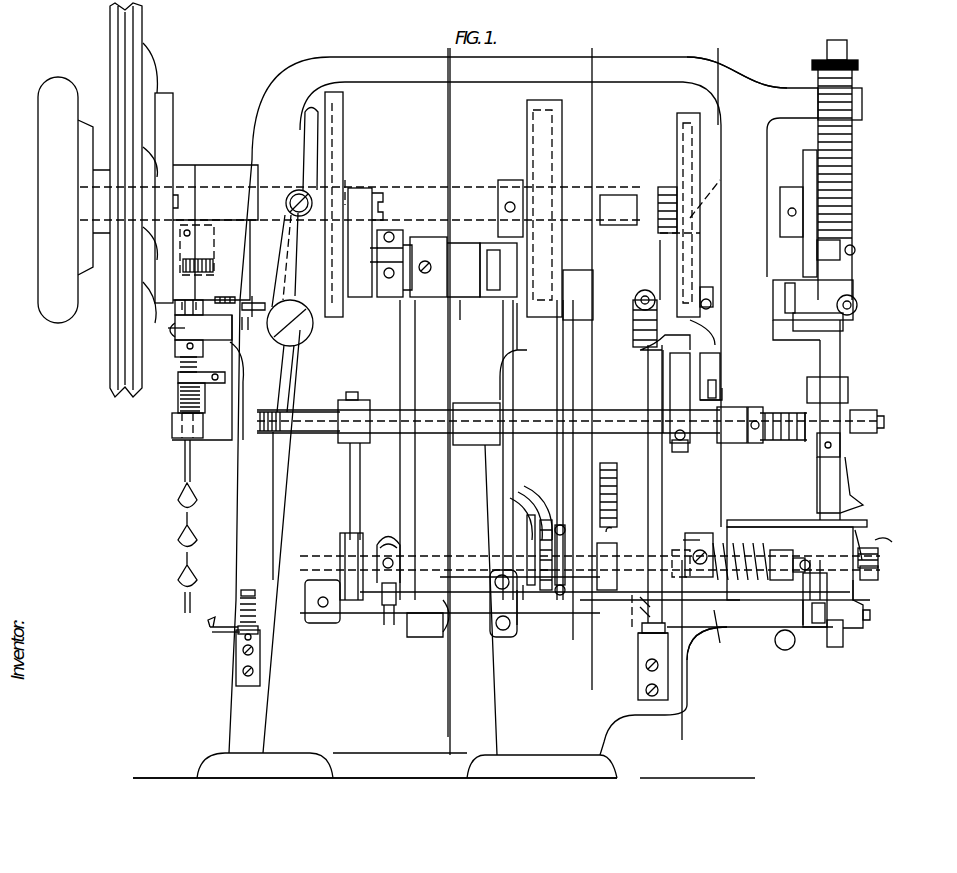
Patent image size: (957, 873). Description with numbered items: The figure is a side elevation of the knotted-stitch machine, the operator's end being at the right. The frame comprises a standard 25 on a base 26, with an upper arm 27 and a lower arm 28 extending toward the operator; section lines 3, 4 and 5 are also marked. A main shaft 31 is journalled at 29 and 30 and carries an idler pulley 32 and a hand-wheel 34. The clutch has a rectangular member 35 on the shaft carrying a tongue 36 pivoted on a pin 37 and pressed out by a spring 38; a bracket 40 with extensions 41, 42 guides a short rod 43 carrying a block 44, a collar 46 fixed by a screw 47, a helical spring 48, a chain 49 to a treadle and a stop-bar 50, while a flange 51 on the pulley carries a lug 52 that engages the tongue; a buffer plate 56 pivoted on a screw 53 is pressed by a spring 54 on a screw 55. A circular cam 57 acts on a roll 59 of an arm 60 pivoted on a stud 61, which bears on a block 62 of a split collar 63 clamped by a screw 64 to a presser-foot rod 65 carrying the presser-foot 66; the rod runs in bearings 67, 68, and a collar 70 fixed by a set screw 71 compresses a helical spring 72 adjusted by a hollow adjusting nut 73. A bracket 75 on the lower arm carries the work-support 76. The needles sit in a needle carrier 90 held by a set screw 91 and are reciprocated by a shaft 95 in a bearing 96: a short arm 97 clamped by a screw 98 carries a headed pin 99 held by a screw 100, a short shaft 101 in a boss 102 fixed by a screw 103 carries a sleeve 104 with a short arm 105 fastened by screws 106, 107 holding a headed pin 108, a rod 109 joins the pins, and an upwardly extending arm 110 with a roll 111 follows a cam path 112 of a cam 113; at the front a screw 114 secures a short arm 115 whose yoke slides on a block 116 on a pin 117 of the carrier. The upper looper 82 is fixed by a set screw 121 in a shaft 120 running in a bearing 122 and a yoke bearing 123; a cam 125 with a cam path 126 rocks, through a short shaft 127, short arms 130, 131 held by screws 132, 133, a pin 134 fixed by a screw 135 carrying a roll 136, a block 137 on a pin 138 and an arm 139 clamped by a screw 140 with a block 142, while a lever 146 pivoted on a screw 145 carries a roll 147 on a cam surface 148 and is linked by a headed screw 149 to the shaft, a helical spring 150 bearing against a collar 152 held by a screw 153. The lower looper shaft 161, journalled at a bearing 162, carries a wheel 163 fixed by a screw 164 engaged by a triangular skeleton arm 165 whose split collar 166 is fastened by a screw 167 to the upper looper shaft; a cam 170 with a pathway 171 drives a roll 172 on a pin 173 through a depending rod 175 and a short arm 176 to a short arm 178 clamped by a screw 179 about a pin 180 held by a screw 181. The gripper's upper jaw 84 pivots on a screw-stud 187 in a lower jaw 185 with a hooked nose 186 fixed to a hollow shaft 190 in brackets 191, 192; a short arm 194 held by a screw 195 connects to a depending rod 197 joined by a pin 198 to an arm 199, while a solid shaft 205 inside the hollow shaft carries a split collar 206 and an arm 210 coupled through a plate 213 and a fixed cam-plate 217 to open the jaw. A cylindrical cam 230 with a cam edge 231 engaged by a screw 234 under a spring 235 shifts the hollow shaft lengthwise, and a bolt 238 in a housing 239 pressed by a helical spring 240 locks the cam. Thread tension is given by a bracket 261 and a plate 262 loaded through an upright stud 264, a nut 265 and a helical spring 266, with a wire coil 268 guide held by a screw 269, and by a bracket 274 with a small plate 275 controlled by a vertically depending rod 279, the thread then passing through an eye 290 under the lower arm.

The section line 3 is at (703, 392).
The section line 4 is at (591, 370).
The section line 5 is at (440, 392).
The frame standard 25 is at (237, 516).
The base 26 is at (204, 764).
The frame head 27 is at (651, 64).
The collar 28 is at (697, 517).
The lever 29 is at (258, 203).
The housing 30 is at (754, 210).
The main shaft 31 is at (432, 218).
The driving pulley 32 is at (140, 32).
The hand wheel 34 is at (52, 147).
The bearing block 35 is at (187, 172).
The bracket 36 is at (178, 296).
The plate 37 is at (193, 234).
The rack 38 is at (215, 264).
The bracket 40 is at (207, 392).
The latch 41 is at (185, 332).
The housing 42 is at (175, 437).
The rod 43 is at (186, 460).
The pin 44 is at (183, 312).
The spring seat 46 is at (181, 352).
The screw 47 is at (193, 348).
The spring 48 is at (180, 390).
The chain 49 is at (182, 558).
The pin 50 is at (182, 410).
The pulley hub 51 is at (176, 108).
The key 52 is at (180, 202).
The clip 53 is at (230, 288).
The arm 54 is at (255, 332).
The clip 55 is at (258, 295).
The block 56 is at (201, 327).
The rod 57 is at (820, 172).
The bracket 59 is at (813, 282).
The arm 60 is at (818, 348).
The plate 61 is at (838, 332).
The pin 62 is at (796, 300).
The screw head 63 is at (857, 298).
The screw 64 is at (857, 314).
The post 65 is at (835, 364).
The presser foot 66 is at (838, 492).
The nut 67 is at (862, 110).
The block 68 is at (848, 387).
The clamp 70 is at (838, 248).
The screw 71 is at (857, 253).
The threaded rod 72 is at (852, 198).
The knurled knob 73 is at (855, 78).
The block 75 is at (768, 550).
The plate 76 is at (870, 526).
The bar 82 is at (860, 457).
The clamp 84 is at (876, 550).
The block 90 is at (850, 630).
The screw 91 is at (872, 617).
The shaft 95 is at (464, 568).
The bracket 96 is at (420, 630).
The arm 97 is at (386, 612).
The roller 98 is at (388, 530).
The cam 99 is at (438, 640).
The pin 100 is at (392, 630).
The screw 101 is at (432, 240).
The block 102 is at (416, 240).
The bracket 103 is at (436, 300).
The pin 104 is at (362, 293).
The bearing 105 is at (388, 280).
The collar 106 is at (390, 232).
The plate 107 is at (396, 295).
The arm 108 is at (441, 328).
The rod 109 is at (414, 477).
The block 110 is at (360, 212).
The pin 111 is at (347, 185).
The slot 112 is at (338, 128).
The plate 113 is at (342, 106).
The pin 114 is at (812, 577).
The block 115 is at (810, 595).
The block 116 is at (818, 630).
The rod 117 is at (805, 632).
The bar 120 is at (619, 424).
The knob 121 is at (884, 422).
The block 122 is at (462, 402).
The bar 123 is at (730, 445).
The plate 125 is at (684, 115).
The slot 126 is at (683, 136).
The arm 127 is at (712, 342).
The rod 130 is at (668, 274).
The block 131 is at (710, 366).
The bearing 132 is at (660, 337).
The screw 133 is at (712, 290).
The pin 134 is at (712, 246).
The bearing 135 is at (664, 225).
The pin 136 is at (721, 199).
The arm 137 is at (722, 400).
The pin 138 is at (718, 389).
The lever 139 is at (688, 412).
The block 140 is at (676, 458).
The lever 142 is at (662, 352).
The hub 145 is at (312, 325).
The lever arm 146 is at (302, 378).
The pivot 147 is at (293, 192).
The lever arm 148 is at (315, 137).
The rod 149 is at (298, 496).
The pin 150 is at (794, 444).
The block 152 is at (756, 444).
The spring 153 is at (767, 412).
The arm 161 is at (716, 630).
The bar 162 is at (740, 632).
The bracket 163 is at (343, 650).
The plate 164 is at (325, 595).
The rod 165 is at (349, 519).
The block 166 is at (362, 410).
The screw 167 is at (355, 394).
The plate 170 is at (560, 118).
The slot 171 is at (534, 130).
The block 172 is at (530, 260).
The bracket 173 is at (480, 285).
The rod 175 is at (518, 391).
The block 176 is at (497, 292).
The bracket 178 is at (505, 633).
The pin 179 is at (520, 620).
The pin 180 is at (530, 600).
The screw 181 is at (497, 590).
The block 185 is at (874, 588).
The arm 186 is at (866, 538).
The spring 187 is at (905, 542).
The screw 190 is at (802, 558).
The housing 191 is at (775, 577).
The rod 192 is at (573, 631).
The rod 194 is at (557, 530).
The rack 195 is at (550, 520).
The rod 197 is at (573, 459).
The bracket 198 is at (532, 351).
The roller 199 is at (583, 290).
The pin 205 is at (648, 612).
The screw 206 is at (880, 570).
The shaft 210 is at (545, 575).
The plate 213 is at (530, 515).
The spring 217 is at (509, 513).
The block 230 is at (676, 548).
The screw 231 is at (714, 549).
The arm 234 is at (703, 619).
The spring 235 is at (740, 542).
The stop 238 is at (613, 532).
The plate 239 is at (617, 492).
The rack 240 is at (612, 480).
The bracket 261 is at (242, 679).
The lever 262 is at (208, 630).
The spring 264 is at (258, 620).
The cap 265 is at (256, 590).
The collar 266 is at (240, 612).
The pin 268 is at (226, 636).
The screw 269 is at (254, 640).
The bracket 274 is at (660, 678).
The block 275 is at (650, 642).
The rod 279 is at (648, 618).
The roller 290 is at (781, 651).